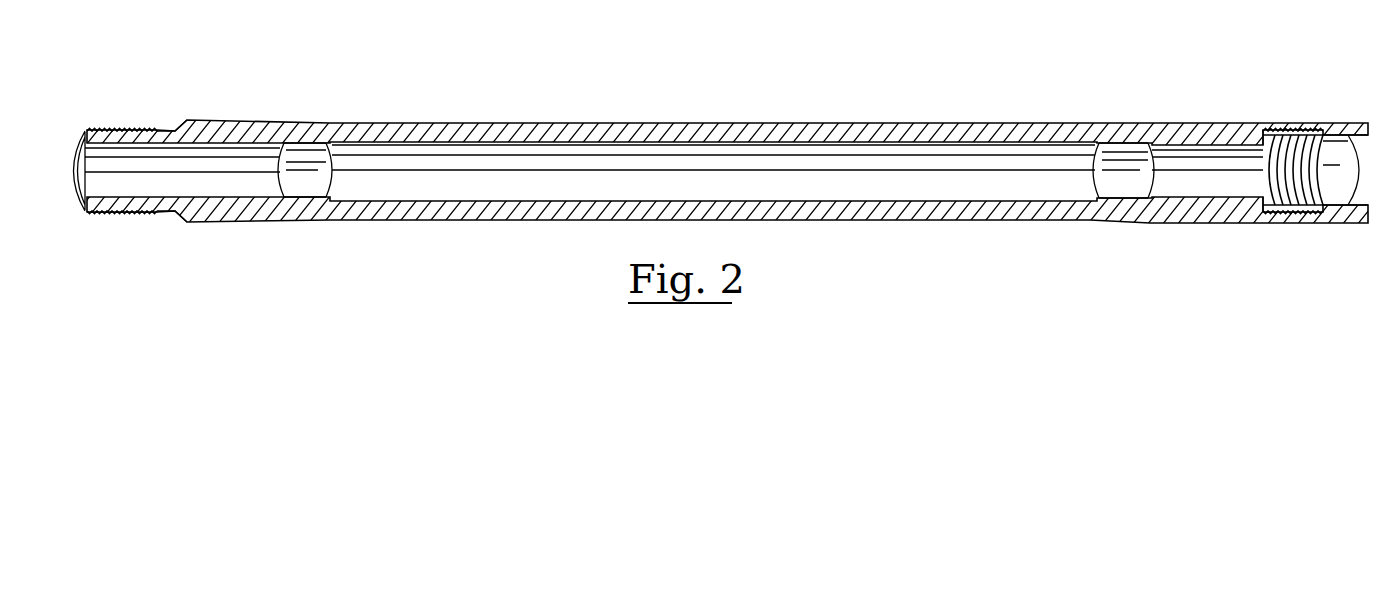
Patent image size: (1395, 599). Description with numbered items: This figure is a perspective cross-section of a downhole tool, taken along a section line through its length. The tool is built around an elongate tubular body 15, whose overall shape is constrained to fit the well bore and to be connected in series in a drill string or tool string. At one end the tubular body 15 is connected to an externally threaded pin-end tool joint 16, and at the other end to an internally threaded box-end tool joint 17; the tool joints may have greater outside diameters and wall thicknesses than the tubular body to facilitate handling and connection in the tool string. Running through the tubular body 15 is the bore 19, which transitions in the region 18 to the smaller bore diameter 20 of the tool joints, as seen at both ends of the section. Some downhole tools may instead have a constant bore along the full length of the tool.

The elongate tubular body 15 is at (650, 122).
The externally threaded pin-end tool joint 16 is at (250, 119).
The internally threaded box-end tool joint 17 is at (1305, 120).
The transition region 18 is at (313, 167).
The bore 19 is at (768, 163).
The smaller bore diameter 20 is at (149, 165).